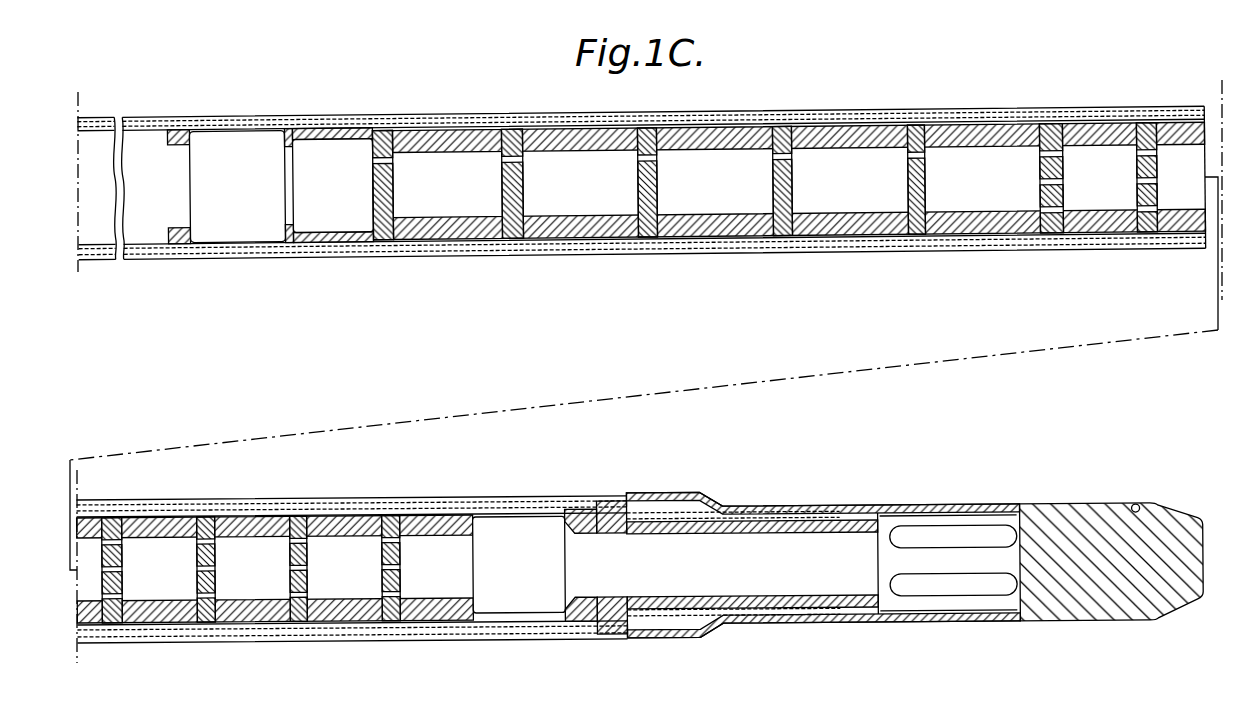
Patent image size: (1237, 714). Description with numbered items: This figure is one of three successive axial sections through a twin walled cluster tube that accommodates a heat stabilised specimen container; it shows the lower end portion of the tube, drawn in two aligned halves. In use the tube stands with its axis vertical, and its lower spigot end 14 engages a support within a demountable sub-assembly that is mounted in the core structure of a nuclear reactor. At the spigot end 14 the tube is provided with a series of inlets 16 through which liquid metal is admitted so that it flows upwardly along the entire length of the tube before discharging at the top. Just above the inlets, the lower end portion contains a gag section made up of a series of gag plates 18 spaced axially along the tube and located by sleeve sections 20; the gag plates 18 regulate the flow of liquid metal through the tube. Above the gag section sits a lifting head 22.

The spigot end 14 is at (1047, 626).
The inlets 16 is at (944, 590).
The gag plates 18 is at (1055, 222).
The sleeve sections 20 is at (727, 223).
The lifting head 22 is at (308, 134).